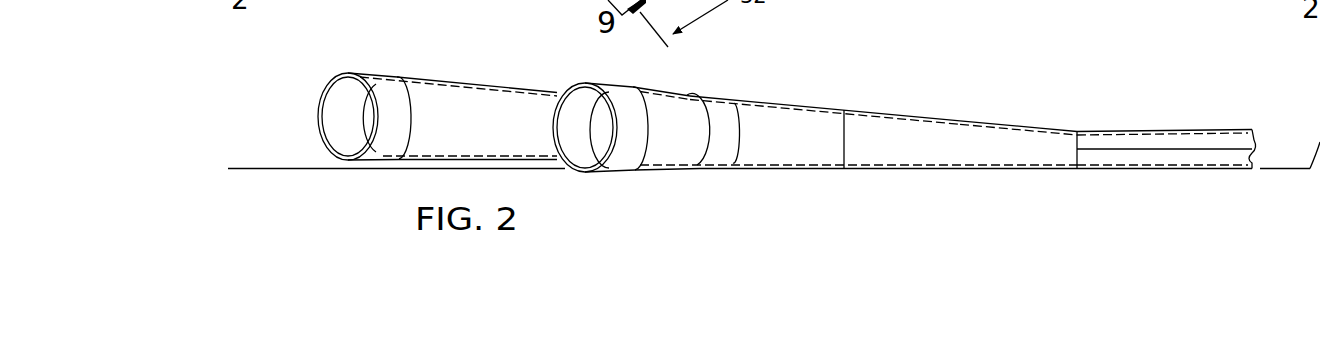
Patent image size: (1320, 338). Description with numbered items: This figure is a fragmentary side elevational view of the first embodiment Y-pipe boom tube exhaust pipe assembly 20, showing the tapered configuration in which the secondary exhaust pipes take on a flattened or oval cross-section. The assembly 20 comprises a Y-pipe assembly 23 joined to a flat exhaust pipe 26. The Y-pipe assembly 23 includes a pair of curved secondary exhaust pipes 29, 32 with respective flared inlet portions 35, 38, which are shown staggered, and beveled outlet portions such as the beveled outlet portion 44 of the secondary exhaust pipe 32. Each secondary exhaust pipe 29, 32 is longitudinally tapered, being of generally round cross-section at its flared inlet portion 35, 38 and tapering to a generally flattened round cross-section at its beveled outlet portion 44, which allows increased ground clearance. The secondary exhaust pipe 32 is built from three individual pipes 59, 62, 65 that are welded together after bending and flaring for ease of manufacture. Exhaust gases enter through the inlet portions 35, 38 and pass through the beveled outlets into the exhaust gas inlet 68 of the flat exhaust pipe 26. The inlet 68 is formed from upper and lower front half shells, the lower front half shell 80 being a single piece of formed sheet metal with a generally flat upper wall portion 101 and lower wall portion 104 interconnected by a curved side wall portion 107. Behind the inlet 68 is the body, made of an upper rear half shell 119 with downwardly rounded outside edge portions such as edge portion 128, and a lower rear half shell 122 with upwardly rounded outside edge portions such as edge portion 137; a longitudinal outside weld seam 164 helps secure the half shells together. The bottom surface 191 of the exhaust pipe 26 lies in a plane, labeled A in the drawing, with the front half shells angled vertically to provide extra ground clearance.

The Y-pipe boom tube exhaust pipe assembly 20 is at (959, 70).
The Y-pipe assembly 23 is at (689, 82).
The flat exhaust pipe 26 is at (1078, 111).
The secondary exhaust pipe 29 is at (483, 81).
The secondary exhaust pipe 32 is at (646, 174).
The flared inlet portion 35 is at (372, 72).
The flared inlet portion 38 is at (607, 82).
The beveled outlet portion 44 is at (798, 103).
The pipe 59 is at (658, 90).
The pipe 62 is at (700, 167).
The pipe 65 is at (773, 168).
The exhaust gas inlet 68 is at (998, 118).
The lower front half shell 80 is at (987, 169).
The upper wall portion 101 is at (930, 115).
The lower wall portion 104 is at (898, 170).
The curved side wall portion 107 is at (1035, 147).
The upper rear half shell 119 is at (1180, 130).
The lower rear half shell 122 is at (1173, 169).
The outside edge portion 128 is at (1122, 140).
The outside edge portion 137 is at (1108, 157).
The longitudinal outside weld seam 164 is at (1222, 147).
The bottom surface 191 is at (945, 169).
The support surface A is at (281, 167).